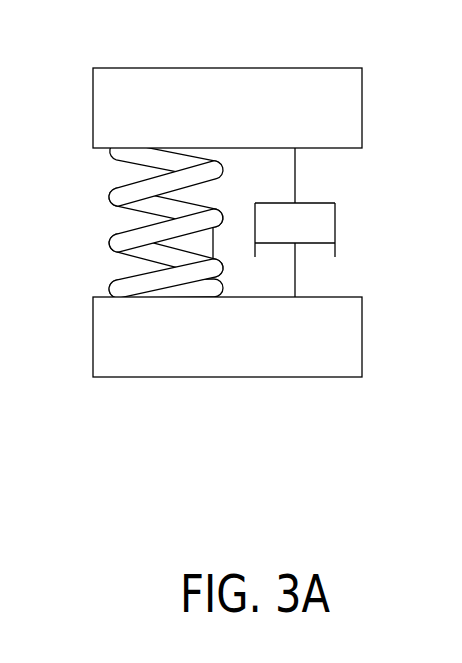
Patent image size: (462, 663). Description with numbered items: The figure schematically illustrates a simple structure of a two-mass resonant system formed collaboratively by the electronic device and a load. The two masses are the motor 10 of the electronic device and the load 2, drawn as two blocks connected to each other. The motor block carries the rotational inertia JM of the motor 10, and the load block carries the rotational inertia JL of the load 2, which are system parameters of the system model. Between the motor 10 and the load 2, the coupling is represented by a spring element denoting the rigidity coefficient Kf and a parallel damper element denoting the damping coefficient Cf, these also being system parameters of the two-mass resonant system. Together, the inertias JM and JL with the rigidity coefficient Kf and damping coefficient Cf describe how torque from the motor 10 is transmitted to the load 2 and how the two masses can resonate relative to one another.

The load 2 is at (227, 80).
The motor 10 is at (261, 337).
The rigidity coefficient Kf is at (143, 220).
The damping coefficient Cf is at (295, 222).
The rotational inertia of the load JL is at (271, 114).
The rotational inertia of the motor JM is at (266, 344).